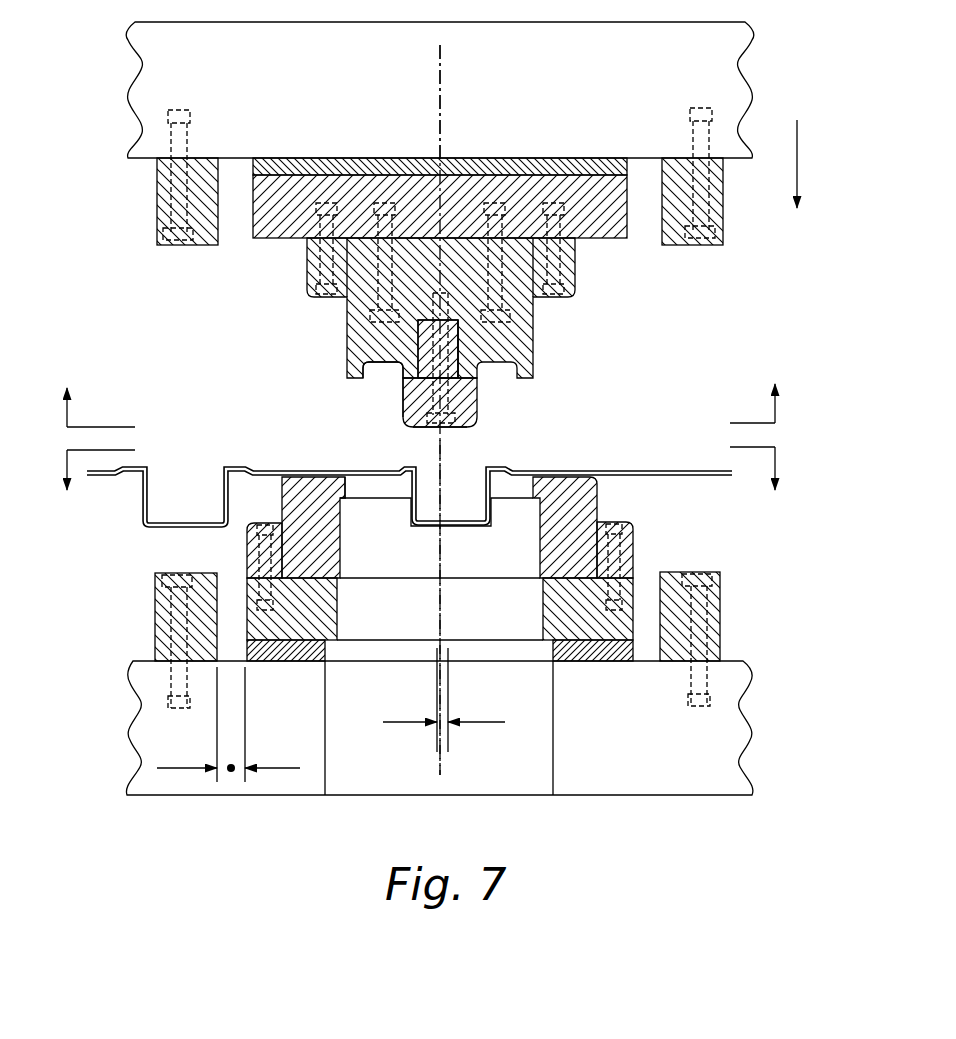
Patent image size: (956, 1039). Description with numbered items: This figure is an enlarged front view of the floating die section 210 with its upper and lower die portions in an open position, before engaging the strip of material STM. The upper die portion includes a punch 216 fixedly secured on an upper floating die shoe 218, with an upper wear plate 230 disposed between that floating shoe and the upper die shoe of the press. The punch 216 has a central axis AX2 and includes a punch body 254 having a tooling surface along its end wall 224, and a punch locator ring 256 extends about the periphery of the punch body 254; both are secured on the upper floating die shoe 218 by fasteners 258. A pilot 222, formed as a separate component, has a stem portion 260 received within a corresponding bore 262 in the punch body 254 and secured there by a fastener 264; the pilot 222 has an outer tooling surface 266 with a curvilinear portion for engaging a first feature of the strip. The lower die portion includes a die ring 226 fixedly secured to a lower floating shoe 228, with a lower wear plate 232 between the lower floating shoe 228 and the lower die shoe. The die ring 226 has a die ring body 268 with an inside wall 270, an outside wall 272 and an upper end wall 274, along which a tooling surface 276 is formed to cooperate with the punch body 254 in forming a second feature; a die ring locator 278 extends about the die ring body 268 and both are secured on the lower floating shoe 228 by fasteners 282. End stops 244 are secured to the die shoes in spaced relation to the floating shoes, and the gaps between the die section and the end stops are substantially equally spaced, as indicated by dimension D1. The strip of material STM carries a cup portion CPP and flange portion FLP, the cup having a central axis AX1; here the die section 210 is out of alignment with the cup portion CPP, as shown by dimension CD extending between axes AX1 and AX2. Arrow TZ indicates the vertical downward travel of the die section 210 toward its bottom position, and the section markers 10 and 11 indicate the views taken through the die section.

The die section 210 is at (182, 305).
The punch 216 is at (444, 335).
The upper floating die shoe 218 is at (603, 177).
The pilot 222 is at (492, 393).
The end wall 224 is at (360, 388).
The die ring 226 is at (426, 568).
The lower floating shoe 228 is at (288, 638).
The upper wear plate 230 is at (508, 157).
The lower wear plate 232 is at (597, 662).
The end stops 244 is at (723, 205).
The punch body 254 is at (345, 315).
The punch locator ring 256 is at (307, 275).
The fasteners 258 is at (372, 212).
The stem portion 260 is at (470, 350).
The bore 262 is at (455, 347).
The fastener 264 is at (403, 398).
The outer tooling surface 266 is at (480, 412).
The die ring body 268 is at (280, 505).
The inside wall 270 is at (535, 518).
The outside wall 272 is at (612, 493).
The upper end wall 274 is at (300, 485).
The tooling surface 276 is at (357, 484).
The die ring locator 278 is at (247, 560).
The fasteners 282 is at (633, 548).
The central axis AX1 is at (463, 490).
The central axis AX2 is at (441, 86).
The cup portion CPP is at (399, 488).
The flange portion FLP is at (576, 470).
The strip of material STM is at (704, 470).
The arrow TZ is at (817, 164).
The dimension CD is at (444, 715).
The dimension D1 is at (231, 772).
The section line 10 is at (426, 389).
The section line 11 is at (426, 486).